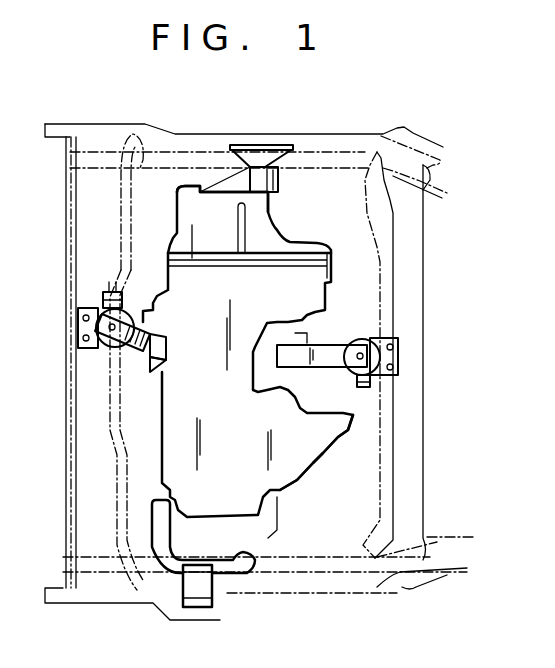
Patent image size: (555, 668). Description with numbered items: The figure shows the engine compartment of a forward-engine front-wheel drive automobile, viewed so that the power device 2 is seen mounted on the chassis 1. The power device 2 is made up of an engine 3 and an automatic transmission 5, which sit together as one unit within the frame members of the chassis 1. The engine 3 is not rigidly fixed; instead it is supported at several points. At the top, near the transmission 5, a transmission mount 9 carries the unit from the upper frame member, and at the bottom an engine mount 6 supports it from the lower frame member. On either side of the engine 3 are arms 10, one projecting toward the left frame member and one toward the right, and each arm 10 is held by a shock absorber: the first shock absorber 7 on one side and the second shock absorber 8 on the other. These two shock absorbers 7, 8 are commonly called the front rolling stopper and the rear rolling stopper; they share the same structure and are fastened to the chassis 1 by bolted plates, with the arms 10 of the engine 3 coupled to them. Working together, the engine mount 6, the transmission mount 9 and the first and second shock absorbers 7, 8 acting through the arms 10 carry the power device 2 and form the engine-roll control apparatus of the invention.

The chassis 1 is at (173, 132).
The power device 2 is at (325, 458).
The engine 3 is at (177, 438).
The automatic transmission 5 is at (190, 206).
The engine mount 6 is at (213, 597).
The first shock absorber 7 is at (100, 350).
The second shock absorber 8 is at (360, 342).
The transmission mount 9 is at (273, 192).
The arms 10 is at (130, 355).